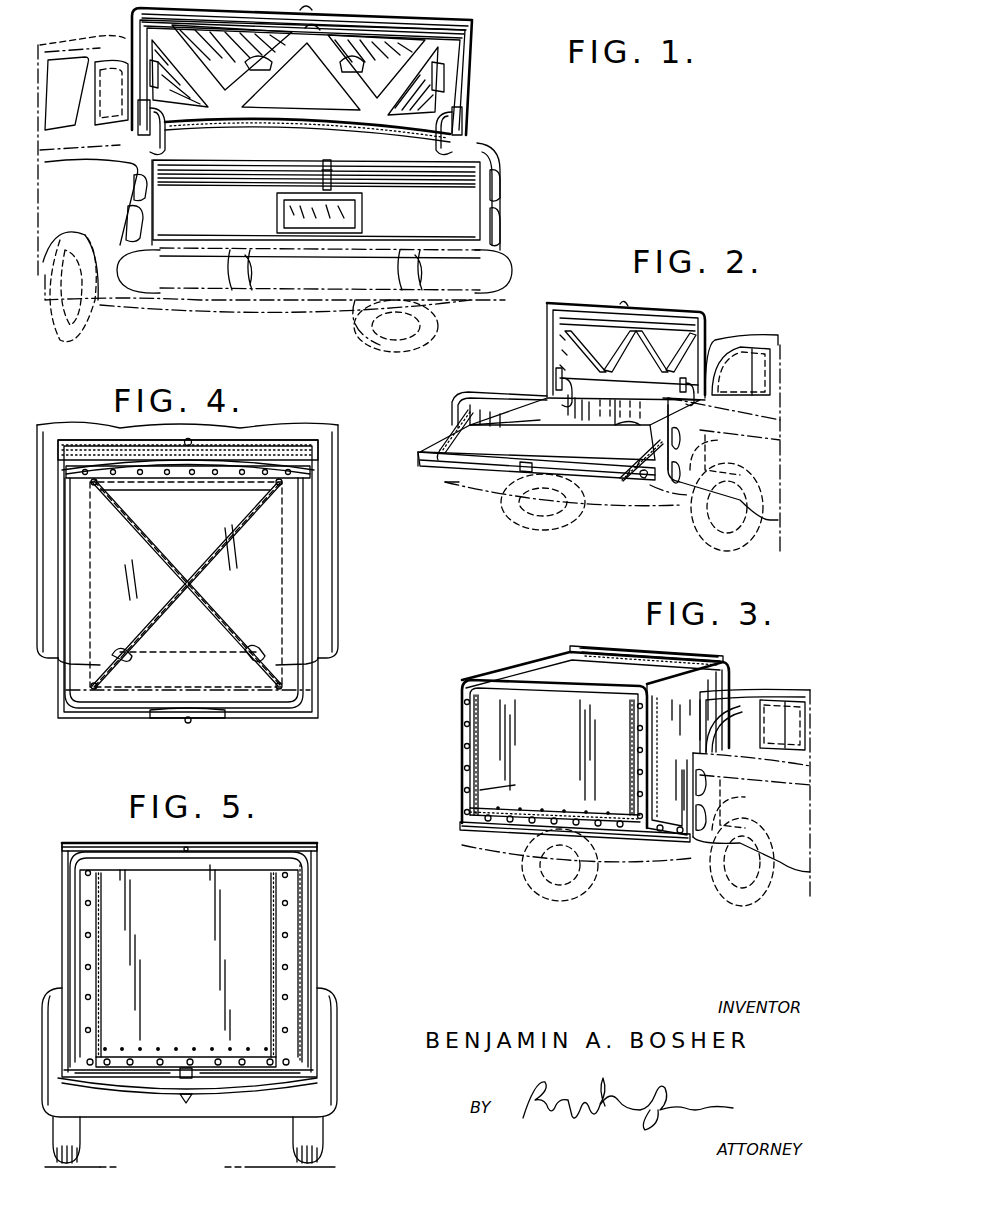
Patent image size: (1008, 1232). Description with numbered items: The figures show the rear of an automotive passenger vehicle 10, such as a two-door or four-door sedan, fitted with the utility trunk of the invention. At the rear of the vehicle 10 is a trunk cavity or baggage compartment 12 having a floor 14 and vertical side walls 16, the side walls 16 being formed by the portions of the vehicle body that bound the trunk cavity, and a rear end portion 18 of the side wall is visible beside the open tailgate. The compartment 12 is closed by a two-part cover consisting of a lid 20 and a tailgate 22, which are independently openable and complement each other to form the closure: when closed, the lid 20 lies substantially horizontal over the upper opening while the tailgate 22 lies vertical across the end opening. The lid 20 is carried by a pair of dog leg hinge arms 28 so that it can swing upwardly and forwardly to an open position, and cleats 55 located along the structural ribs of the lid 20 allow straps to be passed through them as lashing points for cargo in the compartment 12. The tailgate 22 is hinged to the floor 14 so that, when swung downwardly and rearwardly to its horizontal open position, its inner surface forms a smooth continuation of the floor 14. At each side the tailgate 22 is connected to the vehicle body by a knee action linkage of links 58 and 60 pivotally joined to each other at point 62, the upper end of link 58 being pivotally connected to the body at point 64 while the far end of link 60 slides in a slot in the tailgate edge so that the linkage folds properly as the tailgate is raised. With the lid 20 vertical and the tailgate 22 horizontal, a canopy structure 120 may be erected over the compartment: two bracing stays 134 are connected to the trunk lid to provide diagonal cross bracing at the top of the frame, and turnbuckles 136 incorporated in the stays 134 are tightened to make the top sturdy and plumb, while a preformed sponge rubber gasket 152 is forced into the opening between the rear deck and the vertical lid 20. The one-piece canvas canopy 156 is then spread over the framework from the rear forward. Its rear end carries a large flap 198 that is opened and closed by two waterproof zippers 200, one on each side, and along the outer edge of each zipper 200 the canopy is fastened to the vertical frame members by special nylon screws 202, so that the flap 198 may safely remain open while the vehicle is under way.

In FIG. 1, the automotive passenger vehicle 10 is at (89, 33).
In FIG. 2, the automotive passenger vehicle 10 is at (750, 331).
In FIG. 3, the automotive passenger vehicle 10 is at (790, 674).
In FIG. 4, the automotive passenger vehicle 10 is at (187, 543).
In FIG. 5, the automotive passenger vehicle 10 is at (189, 1077).
In FIG. 1, the trunk cavity 12 is at (307, 138).
In FIG. 2, the trunk cavity 12 is at (562, 411).
In FIG. 2, the floor 14 is at (572, 444).
In FIG. 2, the vertical side walls 16 is at (526, 422).
In FIG. 2, the side wall rear end post 18 is at (618, 420).
In FIG. 1, the lid section 20 is at (319, 70).
In FIG. 2, the lid section 20 is at (704, 320).
In FIG. 3, the lid section 20 is at (728, 670).
In FIG. 4, the lid section 20 is at (105, 452).
In FIG. 5, the lid section 20 is at (85, 836).
In FIG. 1, the tailgate section 22 is at (470, 190).
In FIG. 2, the tailgate section 22 is at (450, 470).
In FIG. 3, the tailgate section 22 is at (632, 842).
In FIG. 4, the tailgate section 22 is at (113, 728).
In FIG. 5, the tailgate section 22 is at (238, 1100).
In FIG. 1, the dog leg hinge arms 28 is at (452, 133).
In FIG. 2, the dog leg hinge arms 28 is at (553, 378).
In FIG. 1, the cleats 55 is at (246, 62).
In FIG. 2, the link 58 is at (619, 450).
In FIG. 2, the link 60 is at (603, 459).
In FIG. 2, the pivot point 62 is at (650, 445).
In FIG. 2, the pivot point 64 is at (468, 400).
In FIG. 3, the canopy structure 120 is at (543, 666).
In FIG. 4, the canopy structure 120 is at (254, 712).
In FIG. 5, the canopy structure 120 is at (316, 862).
In FIG. 4, the bracing stays 134 is at (186, 584).
In FIG. 4, the turnbuckles 136 is at (188, 653).
In FIG. 4, the sponge rubber gasket 152 is at (316, 418).
In FIG. 3, the canopy 156 is at (531, 731).
In FIG. 4, the canopy 156 is at (178, 682).
In FIG. 5, the canopy 156 is at (224, 961).
In FIG. 3, the flap 198 is at (470, 802).
In FIG. 5, the flap 198 is at (255, 986).
In FIG. 3, the waterproof zippers 200 is at (470, 772).
In FIG. 5, the waterproof zippers 200 is at (118, 950).
In FIG. 3, the nylon screws 202 is at (466, 740).
In FIG. 5, the nylon screws 202 is at (290, 967).